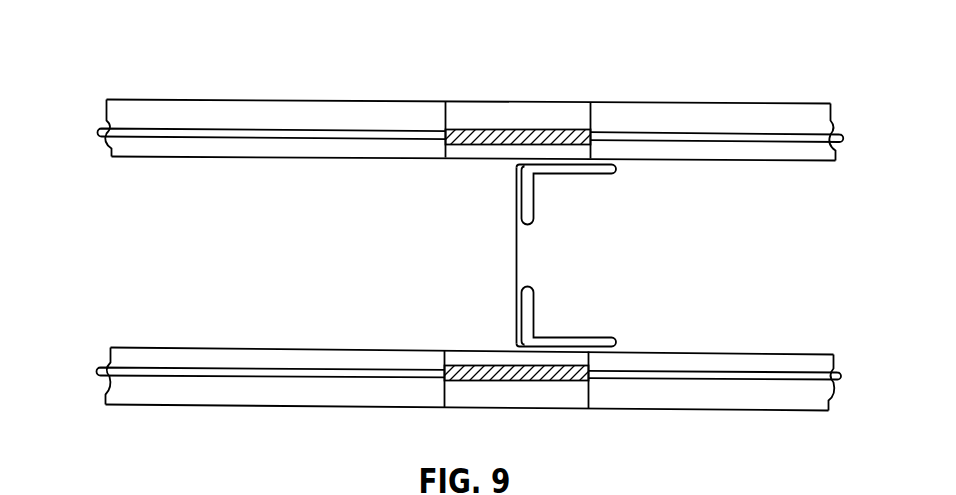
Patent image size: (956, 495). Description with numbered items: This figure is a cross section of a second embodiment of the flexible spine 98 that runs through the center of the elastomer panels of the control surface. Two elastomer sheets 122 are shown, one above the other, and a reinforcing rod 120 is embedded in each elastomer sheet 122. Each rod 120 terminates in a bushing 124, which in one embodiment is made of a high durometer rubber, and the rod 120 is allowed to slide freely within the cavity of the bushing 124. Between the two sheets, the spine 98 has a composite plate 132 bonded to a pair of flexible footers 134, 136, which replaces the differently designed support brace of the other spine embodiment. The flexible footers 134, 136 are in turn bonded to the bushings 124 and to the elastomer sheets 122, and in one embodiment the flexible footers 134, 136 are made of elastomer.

The flexible spine 98 is at (597, 57).
The reinforcing rods 120 is at (95, 124).
The elastomer sheet 122 is at (246, 101).
The bushing 124 is at (483, 110).
The composite plate 132 is at (512, 257).
The flexible footer 134 is at (575, 168).
The flexible footer 136 is at (573, 337).